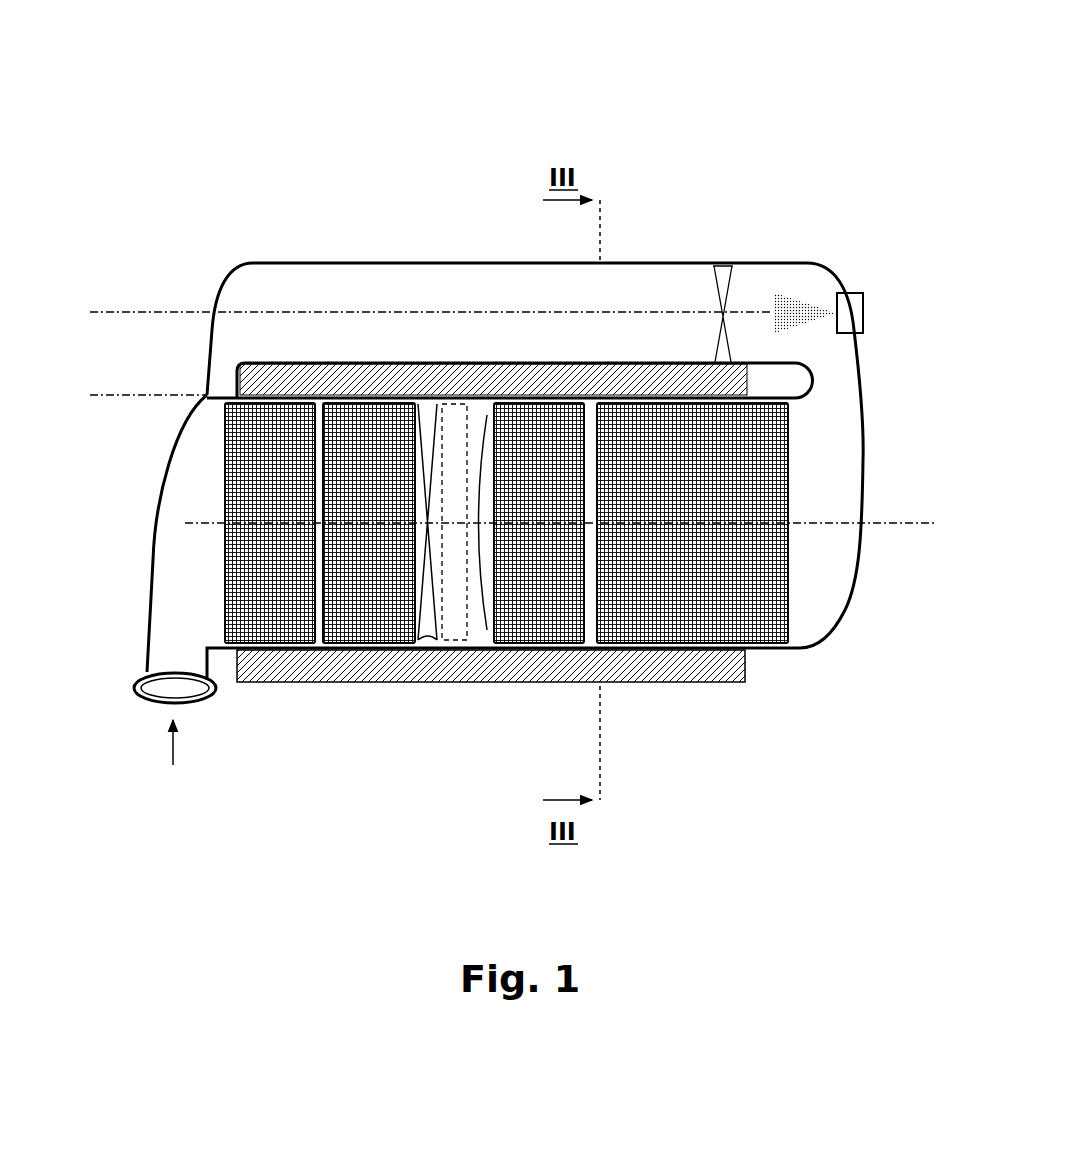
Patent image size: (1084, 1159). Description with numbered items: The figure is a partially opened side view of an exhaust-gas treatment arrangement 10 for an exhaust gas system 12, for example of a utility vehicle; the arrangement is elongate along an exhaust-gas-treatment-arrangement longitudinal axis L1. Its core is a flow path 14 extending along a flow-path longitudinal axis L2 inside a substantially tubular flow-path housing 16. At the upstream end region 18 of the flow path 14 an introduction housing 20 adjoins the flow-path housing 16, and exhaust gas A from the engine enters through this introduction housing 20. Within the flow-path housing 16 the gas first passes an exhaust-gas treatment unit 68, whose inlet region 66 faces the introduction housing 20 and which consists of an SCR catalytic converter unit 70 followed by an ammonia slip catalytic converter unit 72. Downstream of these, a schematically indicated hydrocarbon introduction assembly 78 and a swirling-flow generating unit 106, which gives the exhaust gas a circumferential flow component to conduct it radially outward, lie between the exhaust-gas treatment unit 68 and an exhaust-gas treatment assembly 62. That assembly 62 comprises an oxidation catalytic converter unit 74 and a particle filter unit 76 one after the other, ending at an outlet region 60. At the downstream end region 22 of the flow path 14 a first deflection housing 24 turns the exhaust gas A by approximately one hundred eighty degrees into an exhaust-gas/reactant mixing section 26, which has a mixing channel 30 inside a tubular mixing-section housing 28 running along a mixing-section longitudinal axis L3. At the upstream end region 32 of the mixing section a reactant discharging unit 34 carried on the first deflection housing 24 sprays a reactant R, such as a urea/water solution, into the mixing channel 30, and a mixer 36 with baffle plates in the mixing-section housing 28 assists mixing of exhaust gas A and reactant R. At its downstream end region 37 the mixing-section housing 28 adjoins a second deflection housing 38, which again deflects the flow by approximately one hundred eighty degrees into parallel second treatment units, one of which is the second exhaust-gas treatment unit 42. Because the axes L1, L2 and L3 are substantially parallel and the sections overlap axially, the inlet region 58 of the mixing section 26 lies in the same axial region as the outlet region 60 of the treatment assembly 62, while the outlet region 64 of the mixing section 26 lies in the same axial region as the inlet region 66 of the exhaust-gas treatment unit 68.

The exhaust-gas treatment arrangement 10 is at (715, 142).
The exhaust gas system 12 is at (150, 112).
The flow path 14 is at (148, 420).
The flow-path housing 16 is at (775, 655).
The upstream end region 18 is at (212, 555).
The introduction housing 20 is at (150, 592).
The downstream end region 22 is at (803, 470).
The first deflection housing 24 is at (857, 372).
The exhaust-gas/reactant mixing section 26 is at (637, 238).
The mixing-section housing 28 is at (426, 263).
The mixing channel 30 is at (352, 290).
The upstream end region 32 is at (795, 238).
The reactant discharging unit 34 is at (865, 313).
The mixer 36 is at (723, 266).
The downstream end region 37 is at (265, 238).
The second deflection housing 38 is at (207, 350).
The second exhaust-gas treatment unit 42 is at (255, 686).
The inlet region 58 is at (797, 284).
The outlet region 60 is at (790, 500).
The exhaust-gas treatment assembly 62 is at (802, 665).
The outlet region 64 is at (262, 290).
The inlet region 66 is at (226, 468).
The exhaust-gas treatment unit 68 is at (231, 660).
The SCR catalytic converter unit 70 is at (226, 440).
The ammonia slip catalytic converter unit 72 is at (350, 468).
The oxidation catalytic converter unit 74 is at (540, 620).
The particle filter unit 76 is at (757, 620).
The hydrocarbon introduction assembly 78 is at (485, 640).
The swirling-flow generating unit 106 is at (426, 640).
The exhaust gas A is at (165, 740).
The reactant R is at (797, 306).
The exhaust-gas-treatment-arrangement longitudinal axis L1 is at (95, 393).
The flow-path longitudinal axis L2 is at (905, 526).
The mixing-section longitudinal axis L3 is at (95, 310).